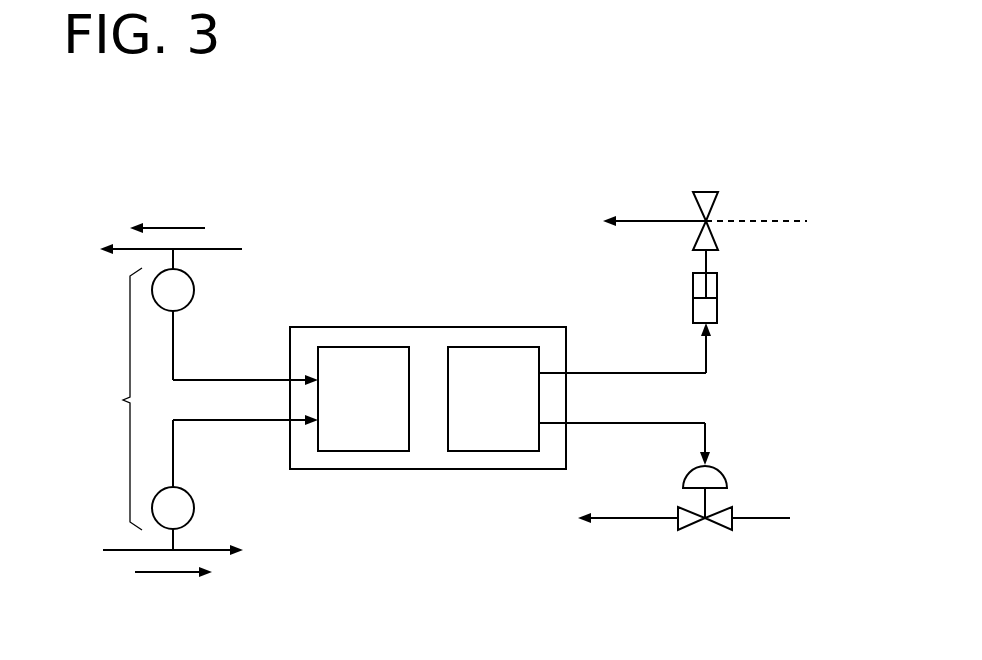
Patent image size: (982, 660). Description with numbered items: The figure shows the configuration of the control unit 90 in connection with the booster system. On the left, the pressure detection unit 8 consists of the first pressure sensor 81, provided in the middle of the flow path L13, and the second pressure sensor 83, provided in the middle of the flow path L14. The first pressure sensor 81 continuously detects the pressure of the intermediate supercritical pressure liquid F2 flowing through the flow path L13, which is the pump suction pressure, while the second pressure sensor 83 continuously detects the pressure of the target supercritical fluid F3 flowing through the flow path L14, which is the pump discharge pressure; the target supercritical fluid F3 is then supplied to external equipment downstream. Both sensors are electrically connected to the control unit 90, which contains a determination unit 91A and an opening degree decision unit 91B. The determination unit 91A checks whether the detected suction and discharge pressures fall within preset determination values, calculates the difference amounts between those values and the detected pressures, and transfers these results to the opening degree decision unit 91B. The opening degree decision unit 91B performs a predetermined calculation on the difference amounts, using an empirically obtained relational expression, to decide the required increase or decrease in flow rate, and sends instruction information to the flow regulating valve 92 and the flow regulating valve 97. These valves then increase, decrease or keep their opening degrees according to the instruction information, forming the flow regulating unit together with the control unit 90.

The pressure detection unit 8 is at (121, 399).
The first pressure sensor 81 is at (194, 511).
The second pressure sensor 83 is at (194, 293).
The control unit 90 is at (430, 325).
The determination unit 91A is at (357, 452).
The opening degree decision unit 91B is at (482, 452).
The flow regulating valve 92 is at (727, 480).
The flow regulating valve 97 is at (718, 198).
The flow path L13 is at (123, 552).
The flow path L14 is at (238, 250).
The intermediate supercritical pressure liquid F2 is at (170, 574).
The target supercritical fluid F3 is at (168, 227).